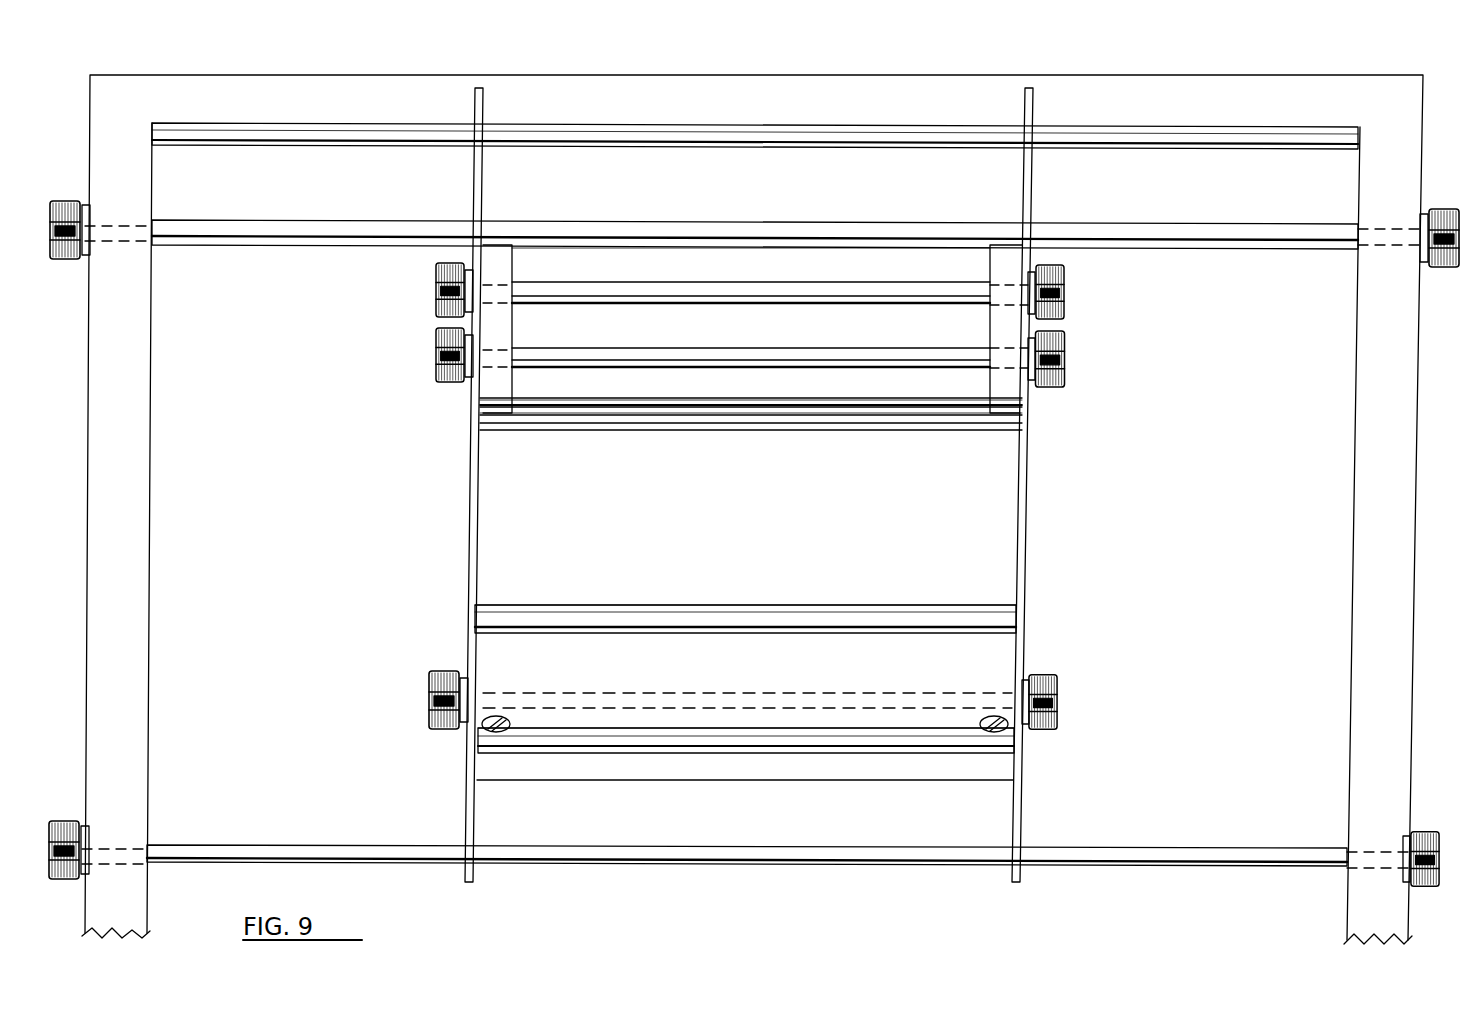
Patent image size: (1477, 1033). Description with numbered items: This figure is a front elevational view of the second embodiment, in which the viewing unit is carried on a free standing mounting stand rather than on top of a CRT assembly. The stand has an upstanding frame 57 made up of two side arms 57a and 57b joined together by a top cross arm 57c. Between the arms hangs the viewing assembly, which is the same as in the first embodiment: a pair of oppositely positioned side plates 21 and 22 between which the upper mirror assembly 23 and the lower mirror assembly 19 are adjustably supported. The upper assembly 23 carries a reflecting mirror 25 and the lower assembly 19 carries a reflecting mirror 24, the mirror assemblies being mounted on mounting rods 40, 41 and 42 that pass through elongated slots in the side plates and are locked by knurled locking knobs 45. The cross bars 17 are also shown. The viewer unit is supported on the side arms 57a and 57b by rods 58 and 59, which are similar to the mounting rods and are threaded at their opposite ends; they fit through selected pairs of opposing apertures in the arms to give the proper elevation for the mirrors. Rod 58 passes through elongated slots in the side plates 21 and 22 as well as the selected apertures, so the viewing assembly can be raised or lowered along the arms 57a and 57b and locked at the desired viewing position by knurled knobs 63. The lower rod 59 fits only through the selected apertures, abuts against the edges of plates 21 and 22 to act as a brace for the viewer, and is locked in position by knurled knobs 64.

The upstanding frame 57 is at (592, 73).
The side arm 57a is at (1372, 410).
The side arm 57b is at (128, 337).
The top cross arm 57c is at (752, 92).
The rod 58 is at (1184, 242).
The rod 59 is at (1168, 848).
The knurled knobs 63 is at (68, 200).
The knurled knobs 64 is at (64, 820).
The side plate 22 is at (468, 473).
The side plate 21 is at (1030, 466).
The upper mirror assembly 23 is at (788, 432).
The mounting rod 41 is at (900, 296).
The mounting rod 40 is at (630, 362).
The reflecting mirror 25 is at (646, 432).
The cross bars 17 is at (935, 425).
The lower mirror assembly 19 is at (758, 604).
The reflecting mirror 24 is at (762, 663).
The mounting rod 42 is at (780, 696).
The locking knobs 45 is at (448, 340).